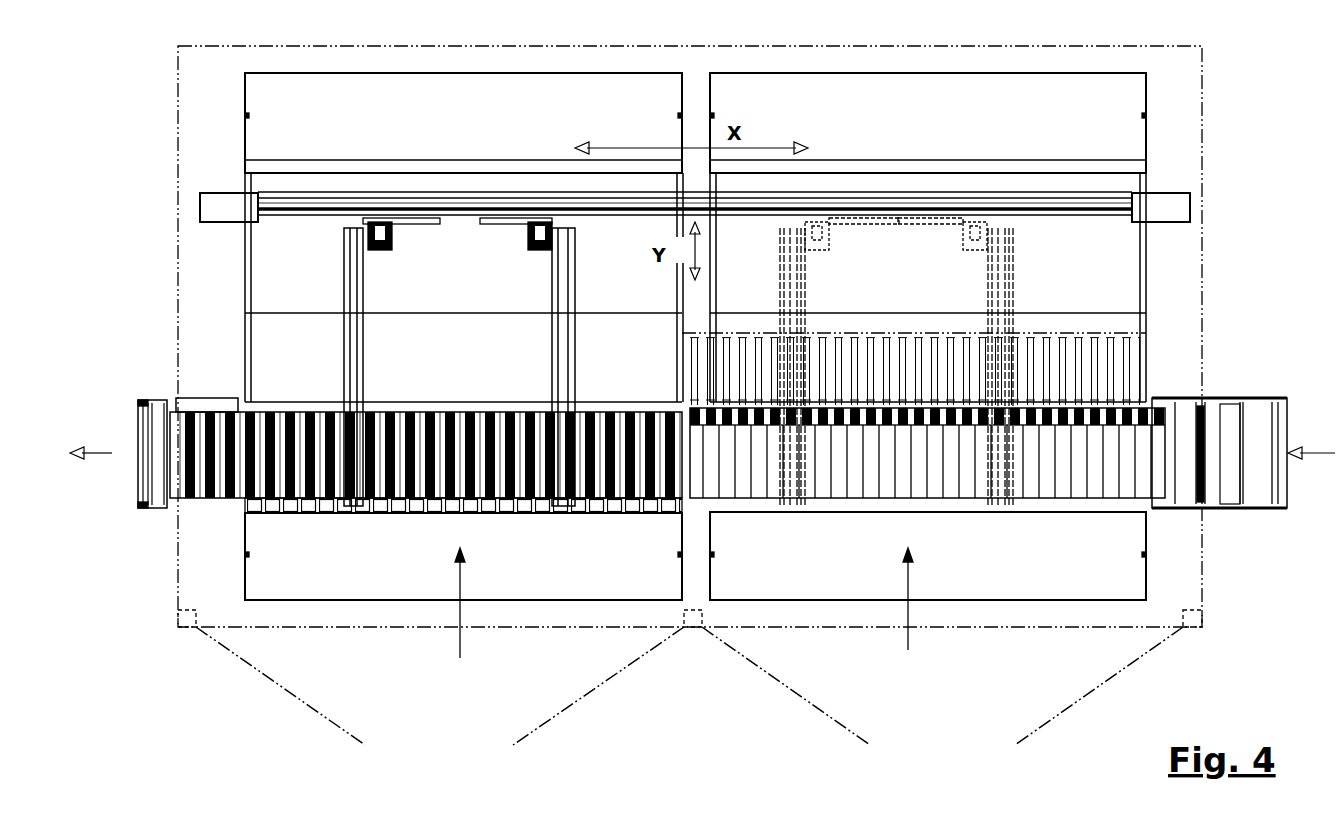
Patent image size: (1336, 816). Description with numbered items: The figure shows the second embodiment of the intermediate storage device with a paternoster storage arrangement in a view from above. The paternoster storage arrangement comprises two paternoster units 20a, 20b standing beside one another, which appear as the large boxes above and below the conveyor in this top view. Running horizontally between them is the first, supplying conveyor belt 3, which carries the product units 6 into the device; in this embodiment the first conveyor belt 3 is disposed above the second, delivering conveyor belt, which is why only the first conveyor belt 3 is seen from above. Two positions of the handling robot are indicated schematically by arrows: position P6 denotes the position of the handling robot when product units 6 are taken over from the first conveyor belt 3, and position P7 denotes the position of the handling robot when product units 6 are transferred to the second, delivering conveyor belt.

The first conveyor belt 3 is at (965, 419).
The product units 6 is at (855, 475).
The paternoster unit 20a is at (463, 336).
The paternoster unit 20b is at (928, 336).
The position of handling robot P6 is at (464, 620).
The position of handling robot P7 is at (913, 617).